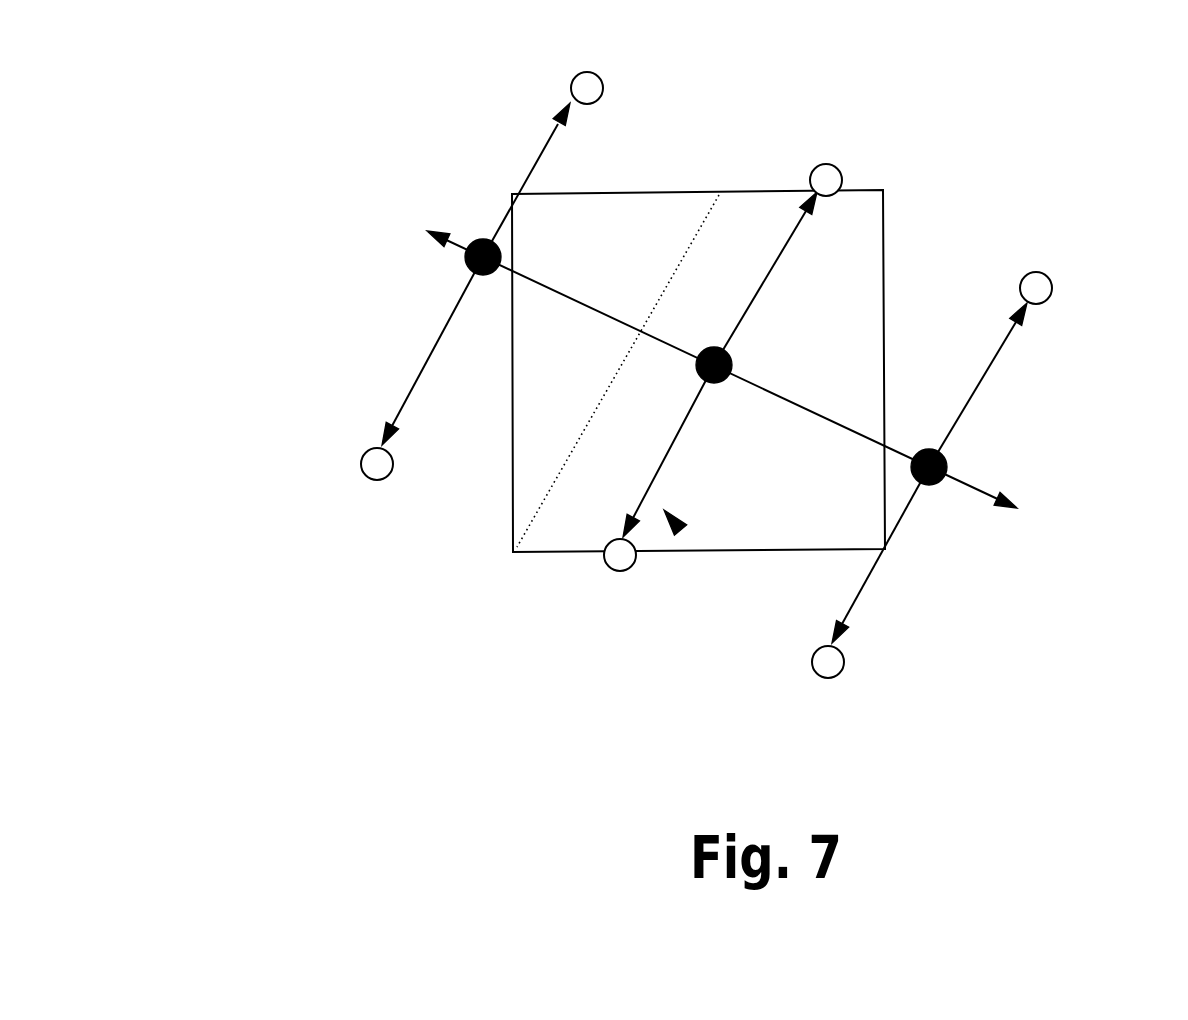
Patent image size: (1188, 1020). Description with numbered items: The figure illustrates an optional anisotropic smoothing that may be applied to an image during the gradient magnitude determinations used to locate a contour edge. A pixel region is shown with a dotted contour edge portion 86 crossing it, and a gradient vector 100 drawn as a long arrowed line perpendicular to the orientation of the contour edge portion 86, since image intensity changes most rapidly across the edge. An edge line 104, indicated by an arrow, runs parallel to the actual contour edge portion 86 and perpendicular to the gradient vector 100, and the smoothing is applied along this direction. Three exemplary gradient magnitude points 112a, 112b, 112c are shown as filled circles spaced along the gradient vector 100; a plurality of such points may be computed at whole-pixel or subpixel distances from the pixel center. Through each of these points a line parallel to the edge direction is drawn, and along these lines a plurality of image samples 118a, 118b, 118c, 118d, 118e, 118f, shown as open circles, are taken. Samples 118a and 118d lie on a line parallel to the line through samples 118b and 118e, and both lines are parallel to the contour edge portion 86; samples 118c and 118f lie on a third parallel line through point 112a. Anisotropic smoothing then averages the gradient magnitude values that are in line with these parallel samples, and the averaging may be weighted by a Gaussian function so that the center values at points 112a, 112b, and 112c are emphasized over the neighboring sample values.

The contour edge portion 86 is at (536, 451).
The gradient vector 100 is at (993, 488).
The edge line 104 is at (683, 533).
The gradient magnitude point 112a is at (948, 461).
The gradient magnitude point 112b is at (730, 353).
The gradient magnitude point 112c is at (470, 272).
The image sample 118a is at (599, 77).
The image sample 118b is at (838, 166).
The image sample 118c is at (1048, 271).
The image sample 118d is at (365, 481).
The image sample 118e is at (604, 568).
The image sample 118f is at (812, 677).